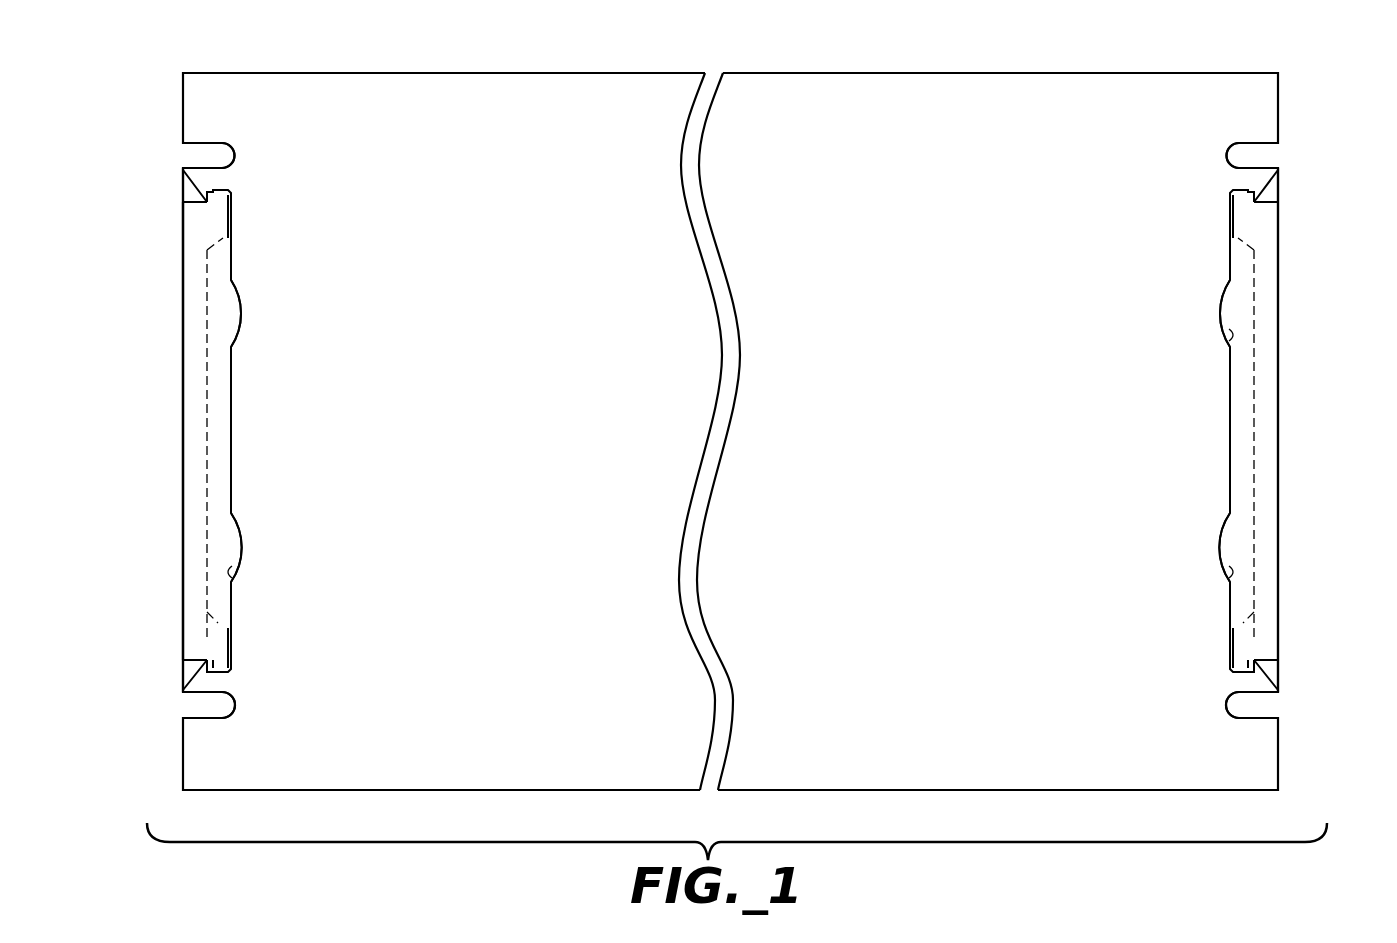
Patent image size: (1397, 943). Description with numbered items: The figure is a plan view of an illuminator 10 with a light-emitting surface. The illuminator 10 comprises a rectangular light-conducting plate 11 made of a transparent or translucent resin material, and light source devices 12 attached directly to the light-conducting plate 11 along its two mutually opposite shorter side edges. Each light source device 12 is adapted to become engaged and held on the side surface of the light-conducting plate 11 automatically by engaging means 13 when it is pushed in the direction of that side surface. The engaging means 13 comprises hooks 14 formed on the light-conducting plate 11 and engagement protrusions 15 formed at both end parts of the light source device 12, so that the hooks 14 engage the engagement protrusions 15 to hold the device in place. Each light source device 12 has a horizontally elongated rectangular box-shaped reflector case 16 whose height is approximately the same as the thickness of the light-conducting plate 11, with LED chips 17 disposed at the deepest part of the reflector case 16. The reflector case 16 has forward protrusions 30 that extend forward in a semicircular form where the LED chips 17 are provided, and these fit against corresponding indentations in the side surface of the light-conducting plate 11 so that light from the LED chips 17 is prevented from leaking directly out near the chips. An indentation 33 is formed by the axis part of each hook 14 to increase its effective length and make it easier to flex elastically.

The illuminator 10 is at (673, 40).
The light-conducting plate 11 is at (505, 72).
The light source device 12 is at (183, 388).
The engaging means 13 is at (169, 152).
The hook 14 is at (200, 175).
The engagement protrusion 15 is at (215, 193).
The reflector case 16 is at (183, 470).
The LED chip 17 is at (214, 312).
The forward protrusion 30 is at (240, 300).
The indentation 33 is at (233, 572).